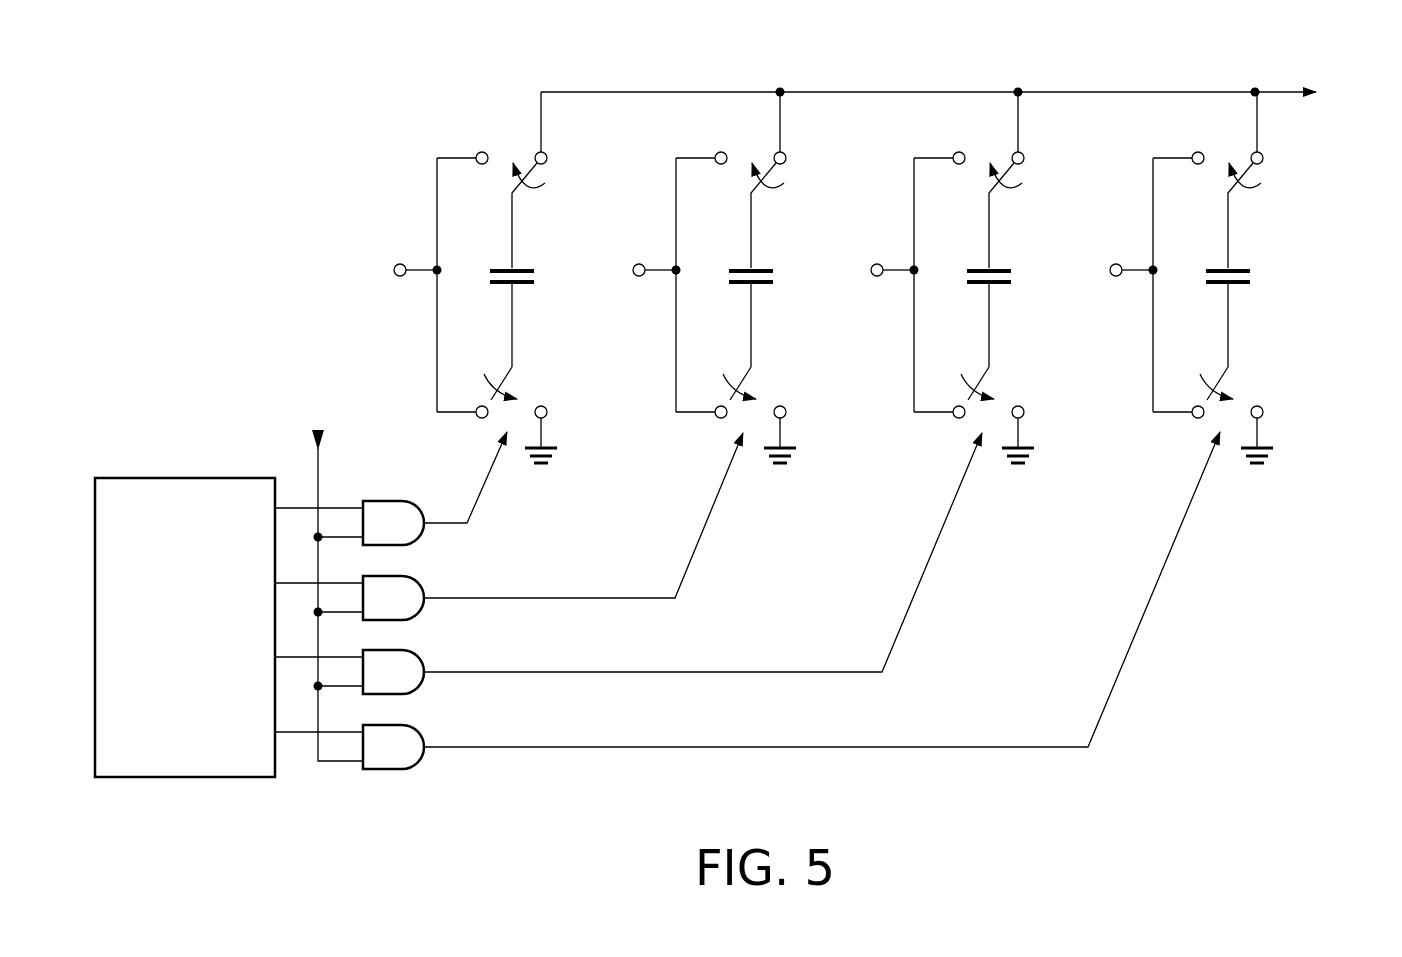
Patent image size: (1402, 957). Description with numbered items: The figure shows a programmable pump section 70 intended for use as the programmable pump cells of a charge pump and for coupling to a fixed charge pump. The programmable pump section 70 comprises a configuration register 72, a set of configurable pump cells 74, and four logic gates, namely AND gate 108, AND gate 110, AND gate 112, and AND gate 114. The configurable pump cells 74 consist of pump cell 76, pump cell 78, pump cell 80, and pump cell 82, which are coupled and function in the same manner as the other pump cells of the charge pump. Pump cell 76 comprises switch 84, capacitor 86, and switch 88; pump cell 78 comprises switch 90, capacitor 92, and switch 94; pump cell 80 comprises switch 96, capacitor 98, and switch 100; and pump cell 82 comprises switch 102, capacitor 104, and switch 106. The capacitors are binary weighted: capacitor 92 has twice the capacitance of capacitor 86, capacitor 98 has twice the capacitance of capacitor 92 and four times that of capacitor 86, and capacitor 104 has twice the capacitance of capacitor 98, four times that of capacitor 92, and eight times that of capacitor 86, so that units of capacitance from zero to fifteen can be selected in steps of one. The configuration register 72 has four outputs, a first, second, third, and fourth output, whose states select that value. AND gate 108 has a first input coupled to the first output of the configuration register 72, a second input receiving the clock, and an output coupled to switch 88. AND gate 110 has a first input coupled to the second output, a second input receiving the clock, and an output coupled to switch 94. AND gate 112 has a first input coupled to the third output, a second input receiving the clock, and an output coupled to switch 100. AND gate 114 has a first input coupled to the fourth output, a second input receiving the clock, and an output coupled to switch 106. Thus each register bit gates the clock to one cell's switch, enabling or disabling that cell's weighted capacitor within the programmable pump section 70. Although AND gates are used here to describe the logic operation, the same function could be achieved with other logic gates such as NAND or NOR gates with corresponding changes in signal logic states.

The programmable pump section 70 is at (232, 85).
The configuration register 72 is at (196, 478).
The configurable pump cells 74 is at (397, 115).
The pump cell 76 is at (512, 140).
The pump cell 78 is at (741, 185).
The pump cell 80 is at (979, 185).
The pump cell 82 is at (1218, 185).
The switch 84 is at (551, 201).
The capacitor 86 is at (527, 268).
The switch 88 is at (529, 388).
The switch 90 is at (799, 182).
The capacitor 92 is at (762, 255).
The switch 94 is at (770, 411).
The switch 96 is at (1037, 182).
The capacitor 98 is at (1000, 255).
The switch 100 is at (1014, 411).
The switch 102 is at (1282, 182).
The capacitor 104 is at (1241, 255).
The switch 106 is at (1253, 411).
The AND gate 108 is at (428, 535).
The AND gate 110 is at (428, 610).
The AND gate 112 is at (428, 684).
The AND gate 114 is at (428, 759).